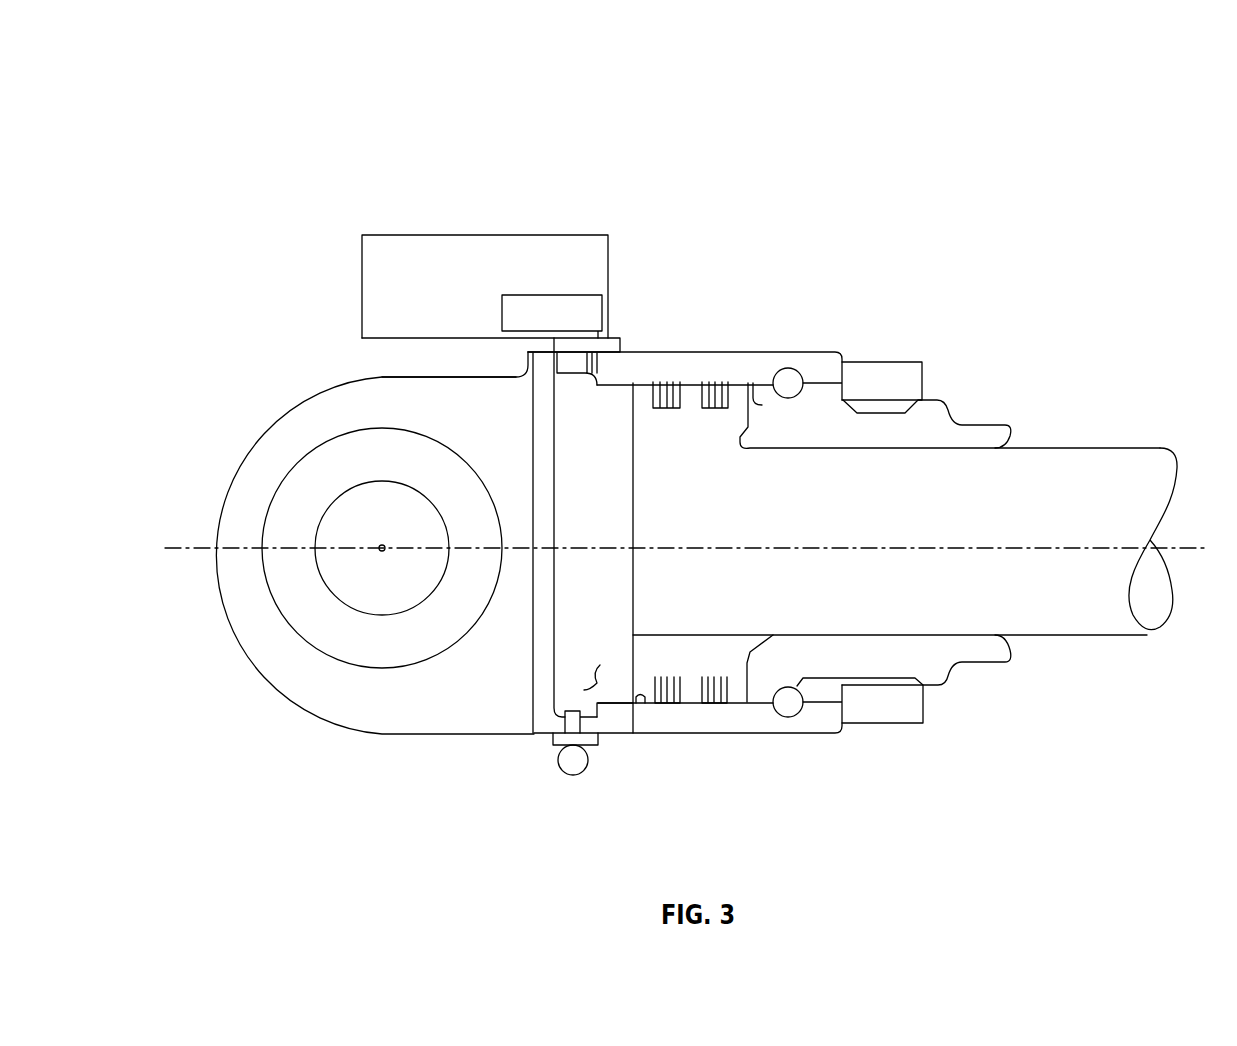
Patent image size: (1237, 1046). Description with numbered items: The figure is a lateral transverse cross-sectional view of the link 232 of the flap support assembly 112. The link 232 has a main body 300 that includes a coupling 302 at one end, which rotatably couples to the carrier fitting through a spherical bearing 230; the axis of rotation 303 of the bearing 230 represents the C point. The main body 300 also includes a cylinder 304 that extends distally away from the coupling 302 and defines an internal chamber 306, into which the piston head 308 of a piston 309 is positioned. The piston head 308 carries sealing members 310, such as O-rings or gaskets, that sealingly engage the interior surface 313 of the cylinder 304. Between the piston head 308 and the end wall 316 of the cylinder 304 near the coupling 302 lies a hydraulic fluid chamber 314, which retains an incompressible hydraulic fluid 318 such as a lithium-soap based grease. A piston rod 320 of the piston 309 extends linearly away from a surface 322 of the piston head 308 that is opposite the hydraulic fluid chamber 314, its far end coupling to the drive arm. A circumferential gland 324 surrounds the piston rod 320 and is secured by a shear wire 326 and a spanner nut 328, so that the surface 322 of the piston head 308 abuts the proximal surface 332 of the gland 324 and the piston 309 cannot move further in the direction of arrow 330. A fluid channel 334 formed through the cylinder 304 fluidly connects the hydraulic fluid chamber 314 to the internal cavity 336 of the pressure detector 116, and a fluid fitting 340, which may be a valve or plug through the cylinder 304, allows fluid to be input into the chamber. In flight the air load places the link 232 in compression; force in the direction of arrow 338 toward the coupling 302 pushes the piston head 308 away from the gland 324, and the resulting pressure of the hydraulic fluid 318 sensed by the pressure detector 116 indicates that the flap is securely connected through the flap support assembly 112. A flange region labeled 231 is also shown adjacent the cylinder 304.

The flap support assembly 112 is at (1137, 143).
The link 232 is at (897, 207).
The main body 300 is at (311, 358).
The coupling 302 is at (250, 430).
The axis of rotation 303 is at (382, 548).
The C point C is at (382, 548).
The spherical bearing 230 is at (415, 610).
The pressure detector 116 is at (475, 221).
The internal cavity 336 is at (553, 318).
The fluid channel 334 is at (574, 362).
The end wall 316 is at (556, 492).
The internal chamber 306 is at (609, 418).
The hydraulic fluid 318 is at (575, 637).
The fluid fitting 340 is at (549, 776).
The hydraulic fluid chamber 314 is at (603, 694).
The interior surface 313 is at (637, 700).
The piston head 308 is at (766, 353).
The collar flange 231 is at (656, 344).
The surface 322 is at (743, 440).
The shear wire 326 is at (753, 400).
The proximal surface 332 is at (737, 402).
The sealing members 310 is at (705, 722).
The cylinder 304 is at (710, 744).
The spanner nut 328 is at (896, 350).
The circumferential gland 324 is at (990, 414).
The piston 309 is at (1025, 465).
The piston rod 320 is at (1113, 649).
The arrow 330 is at (1222, 525).
The arrow 338 is at (1230, 563).